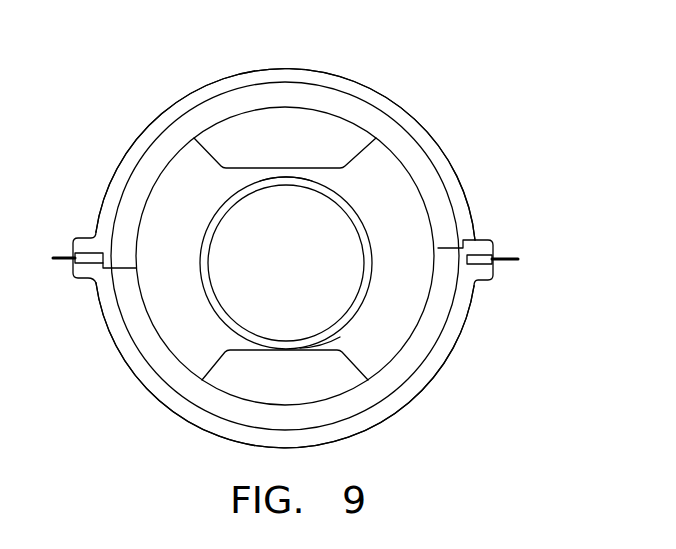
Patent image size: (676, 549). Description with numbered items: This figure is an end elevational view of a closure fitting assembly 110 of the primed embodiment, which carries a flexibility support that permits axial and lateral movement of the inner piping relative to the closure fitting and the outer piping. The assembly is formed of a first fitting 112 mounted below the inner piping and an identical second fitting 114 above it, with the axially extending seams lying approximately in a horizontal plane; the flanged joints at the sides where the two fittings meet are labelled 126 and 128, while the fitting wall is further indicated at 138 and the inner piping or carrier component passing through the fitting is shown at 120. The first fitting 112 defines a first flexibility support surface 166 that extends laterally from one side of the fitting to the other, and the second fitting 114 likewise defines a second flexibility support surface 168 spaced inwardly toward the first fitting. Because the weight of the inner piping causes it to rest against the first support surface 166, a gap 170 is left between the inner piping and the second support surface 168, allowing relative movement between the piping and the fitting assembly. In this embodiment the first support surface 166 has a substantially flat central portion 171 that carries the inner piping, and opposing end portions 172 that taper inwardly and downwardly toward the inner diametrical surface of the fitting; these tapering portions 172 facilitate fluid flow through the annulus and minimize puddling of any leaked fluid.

The fitting assembly 110 is at (403, 85).
The first fitting 112 is at (371, 422).
The second fitting 114 is at (175, 100).
The tube 120 is at (365, 228).
The right flange 126 is at (485, 237).
The left flange 128 is at (82, 281).
The shell wall 138 is at (193, 401).
The first flexibility support surface 166 is at (243, 348).
The second flexibility support surface 168 is at (317, 156).
The gap 170 is at (275, 172).
The flat central portion 171 is at (330, 345).
The end portions 172 is at (177, 362).